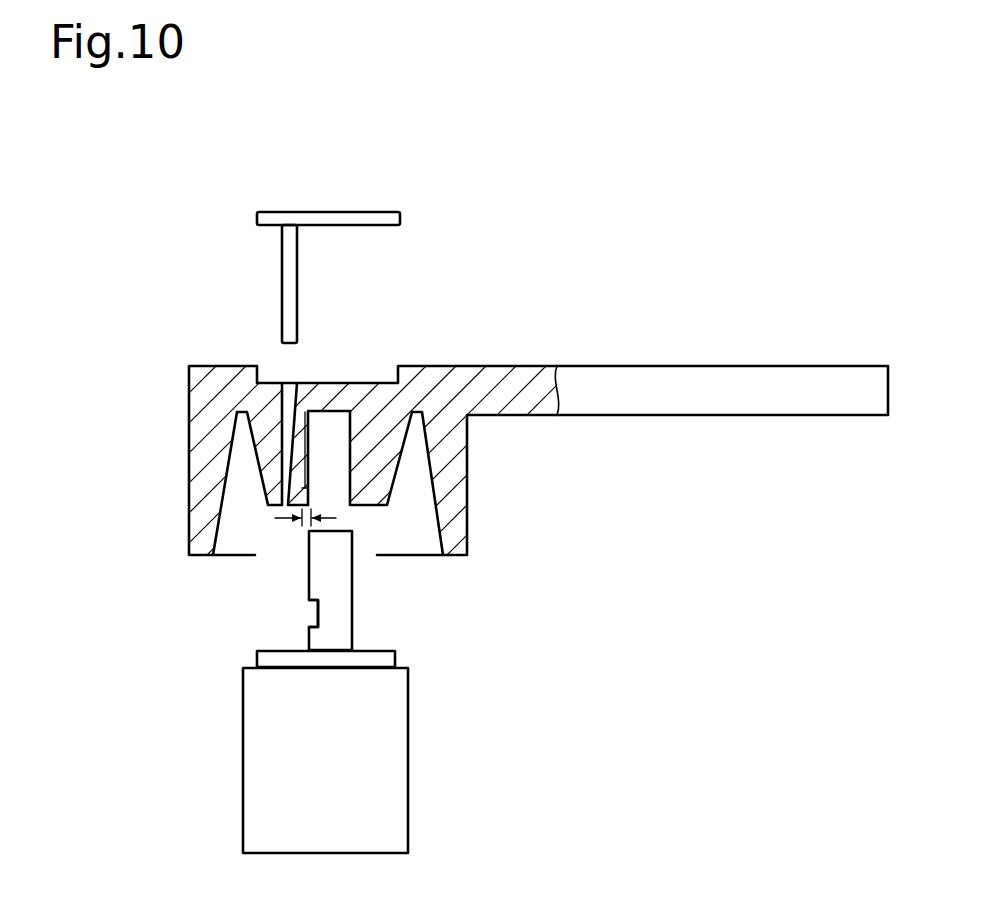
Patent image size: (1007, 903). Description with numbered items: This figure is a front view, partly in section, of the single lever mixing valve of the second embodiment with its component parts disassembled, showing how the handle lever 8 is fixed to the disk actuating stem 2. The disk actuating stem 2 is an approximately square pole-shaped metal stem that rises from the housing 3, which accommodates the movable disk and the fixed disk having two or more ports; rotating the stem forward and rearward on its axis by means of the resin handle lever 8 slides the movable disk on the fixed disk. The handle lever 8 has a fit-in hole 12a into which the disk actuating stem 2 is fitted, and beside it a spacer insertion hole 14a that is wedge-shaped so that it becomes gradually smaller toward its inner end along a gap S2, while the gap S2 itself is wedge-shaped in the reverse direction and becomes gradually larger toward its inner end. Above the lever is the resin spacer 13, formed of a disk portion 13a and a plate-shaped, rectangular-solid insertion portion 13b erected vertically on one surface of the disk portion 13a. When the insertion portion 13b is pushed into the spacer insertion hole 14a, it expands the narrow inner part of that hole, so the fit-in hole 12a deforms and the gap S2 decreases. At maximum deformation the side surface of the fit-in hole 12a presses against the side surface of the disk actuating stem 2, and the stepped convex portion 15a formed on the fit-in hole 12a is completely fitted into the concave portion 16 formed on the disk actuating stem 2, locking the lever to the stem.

The disk actuating stem 2 is at (338, 583).
The housing 3 is at (387, 790).
The handle lever 8 is at (718, 390).
The fit-in hole 12a is at (348, 462).
The spacer 13 is at (290, 240).
The disk portion 13a is at (327, 218).
The insertion portion 13b is at (286, 277).
The spacer insertion hole 14a is at (287, 396).
The stepped convex portion 15a is at (312, 493).
The concave portion 16 is at (316, 610).
The gap S2 is at (302, 527).